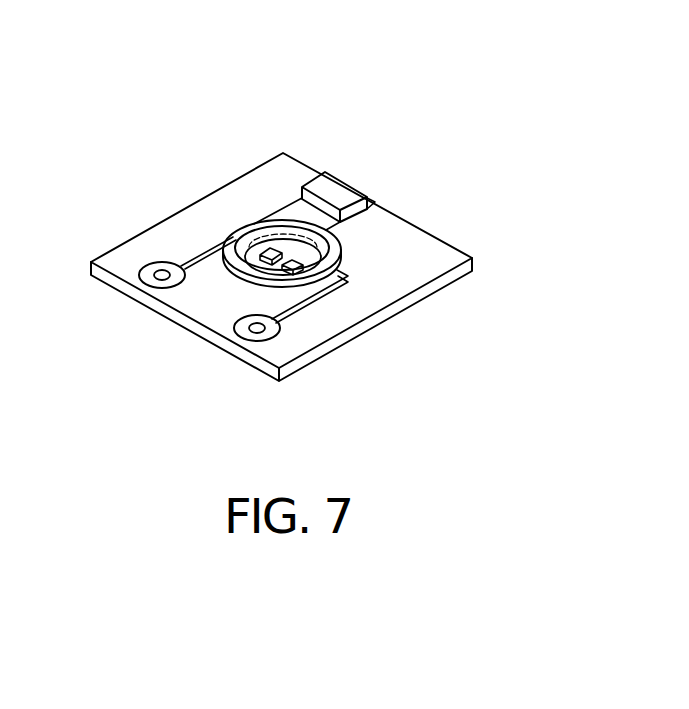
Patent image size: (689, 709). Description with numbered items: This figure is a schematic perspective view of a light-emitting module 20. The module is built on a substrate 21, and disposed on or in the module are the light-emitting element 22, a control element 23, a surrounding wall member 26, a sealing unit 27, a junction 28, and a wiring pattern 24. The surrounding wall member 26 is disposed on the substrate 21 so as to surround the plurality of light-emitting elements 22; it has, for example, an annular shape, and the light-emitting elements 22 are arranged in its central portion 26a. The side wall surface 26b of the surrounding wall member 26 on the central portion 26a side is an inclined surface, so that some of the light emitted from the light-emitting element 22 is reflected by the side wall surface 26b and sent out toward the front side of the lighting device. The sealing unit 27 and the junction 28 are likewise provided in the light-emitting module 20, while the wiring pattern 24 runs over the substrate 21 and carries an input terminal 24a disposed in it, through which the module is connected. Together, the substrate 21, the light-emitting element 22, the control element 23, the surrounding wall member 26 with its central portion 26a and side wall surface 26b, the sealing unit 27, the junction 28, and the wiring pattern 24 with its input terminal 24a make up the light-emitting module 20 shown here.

The light-emitting module 20 is at (443, 192).
The substrate 21 is at (403, 277).
The light-emitting element 22 is at (298, 236).
The control element 23 is at (337, 188).
The wiring pattern 24 is at (205, 250).
The input terminal 24a is at (148, 276).
The surrounding wall member 26 is at (247, 248).
The central portion 26a is at (240, 246).
The side wall surface 26b is at (268, 245).
The sealing unit 27 is at (302, 221).
The junction 28 is at (342, 262).